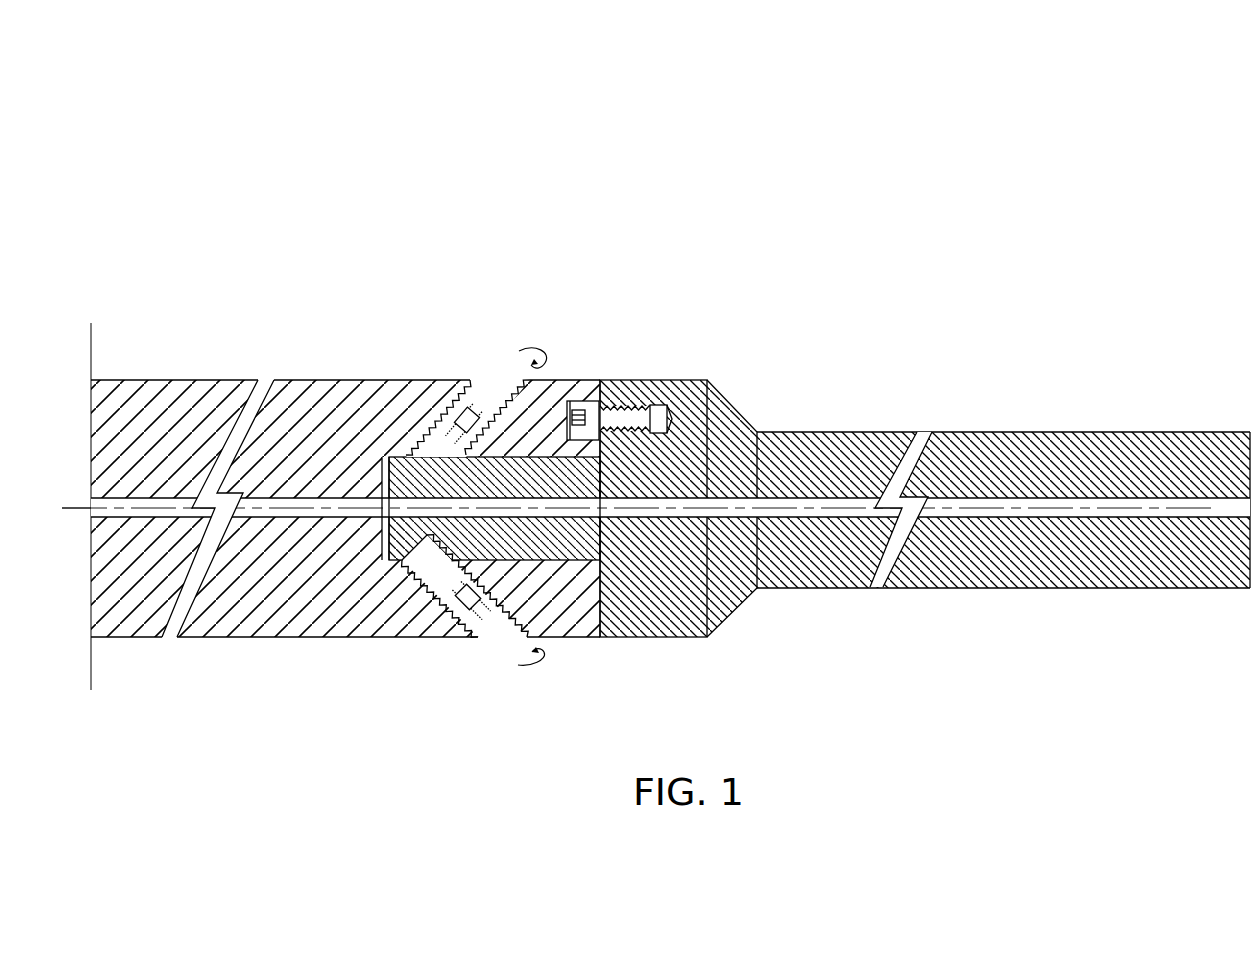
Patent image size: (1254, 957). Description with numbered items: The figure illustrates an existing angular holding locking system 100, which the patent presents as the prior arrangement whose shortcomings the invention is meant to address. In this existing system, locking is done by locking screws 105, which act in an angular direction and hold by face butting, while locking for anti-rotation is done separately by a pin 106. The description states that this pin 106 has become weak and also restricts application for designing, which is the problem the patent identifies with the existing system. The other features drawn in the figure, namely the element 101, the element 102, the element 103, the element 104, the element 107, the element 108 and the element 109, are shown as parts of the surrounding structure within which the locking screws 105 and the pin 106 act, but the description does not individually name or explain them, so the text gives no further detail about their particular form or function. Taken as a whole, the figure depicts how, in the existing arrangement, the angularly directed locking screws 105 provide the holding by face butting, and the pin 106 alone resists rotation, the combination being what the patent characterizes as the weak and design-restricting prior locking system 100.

The clamping assembly 100 is at (656, 383).
The body 101 is at (345, 450).
The threaded bore 102 is at (445, 463).
The clamp block 103 is at (664, 463).
The plate 104 is at (341, 583).
The locking screws 105 is at (510, 515).
The pin 106 is at (673, 384).
The insert 107 is at (544, 579).
The chamfered transition 108 is at (767, 525).
The shaft 109 is at (1003, 537).